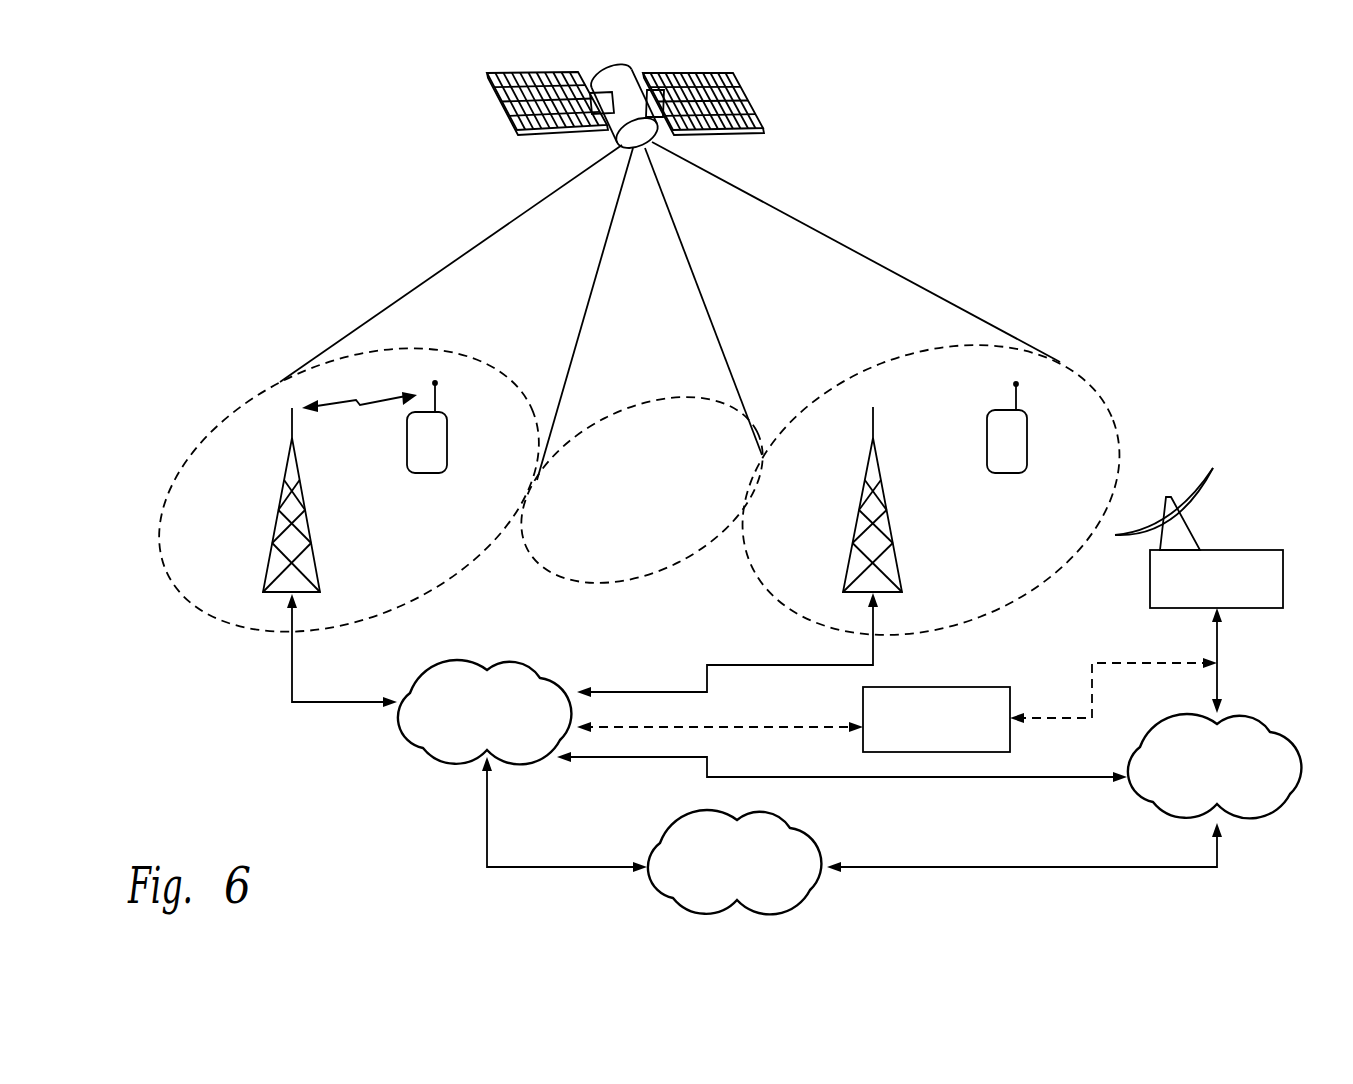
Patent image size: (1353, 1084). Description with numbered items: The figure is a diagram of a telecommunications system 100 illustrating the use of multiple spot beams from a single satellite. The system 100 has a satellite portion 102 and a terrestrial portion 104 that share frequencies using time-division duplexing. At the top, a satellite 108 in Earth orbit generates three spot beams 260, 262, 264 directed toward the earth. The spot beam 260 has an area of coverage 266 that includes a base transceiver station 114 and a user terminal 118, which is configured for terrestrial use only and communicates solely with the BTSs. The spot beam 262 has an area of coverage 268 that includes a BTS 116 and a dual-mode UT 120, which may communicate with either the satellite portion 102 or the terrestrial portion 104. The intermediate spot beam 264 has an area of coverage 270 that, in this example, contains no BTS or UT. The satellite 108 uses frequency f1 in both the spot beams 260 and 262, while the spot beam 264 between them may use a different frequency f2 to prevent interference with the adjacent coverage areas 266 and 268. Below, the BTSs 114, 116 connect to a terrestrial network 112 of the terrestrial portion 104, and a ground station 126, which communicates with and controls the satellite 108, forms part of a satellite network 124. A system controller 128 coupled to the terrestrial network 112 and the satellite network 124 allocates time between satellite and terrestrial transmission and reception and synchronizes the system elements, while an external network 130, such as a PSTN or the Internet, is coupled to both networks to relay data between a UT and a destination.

The system 100 is at (1212, 126).
The satellite portion 102 is at (382, 105).
The terrestrial portion 104 is at (180, 415).
The satellite 108 is at (766, 90).
The terrestrial network 112 is at (430, 763).
The base transceiver station (BTS) 114 is at (320, 575).
The base transceiver station (BTS) 116 is at (900, 567).
The user terminal (UT) 118 is at (427, 474).
The user terminal (UT) 120 is at (1007, 474).
The satellite network 124 is at (1273, 818).
The ground station 126 is at (1278, 548).
The system controller 128 is at (1008, 687).
The external network 130 is at (817, 828).
The spot beam 260 is at (510, 403).
The spot beam 262 is at (812, 445).
The spot beam 264 is at (678, 428).
The area of coverage 266 is at (478, 355).
The area of coverage 268 is at (947, 347).
The area of coverage 270 is at (603, 417).